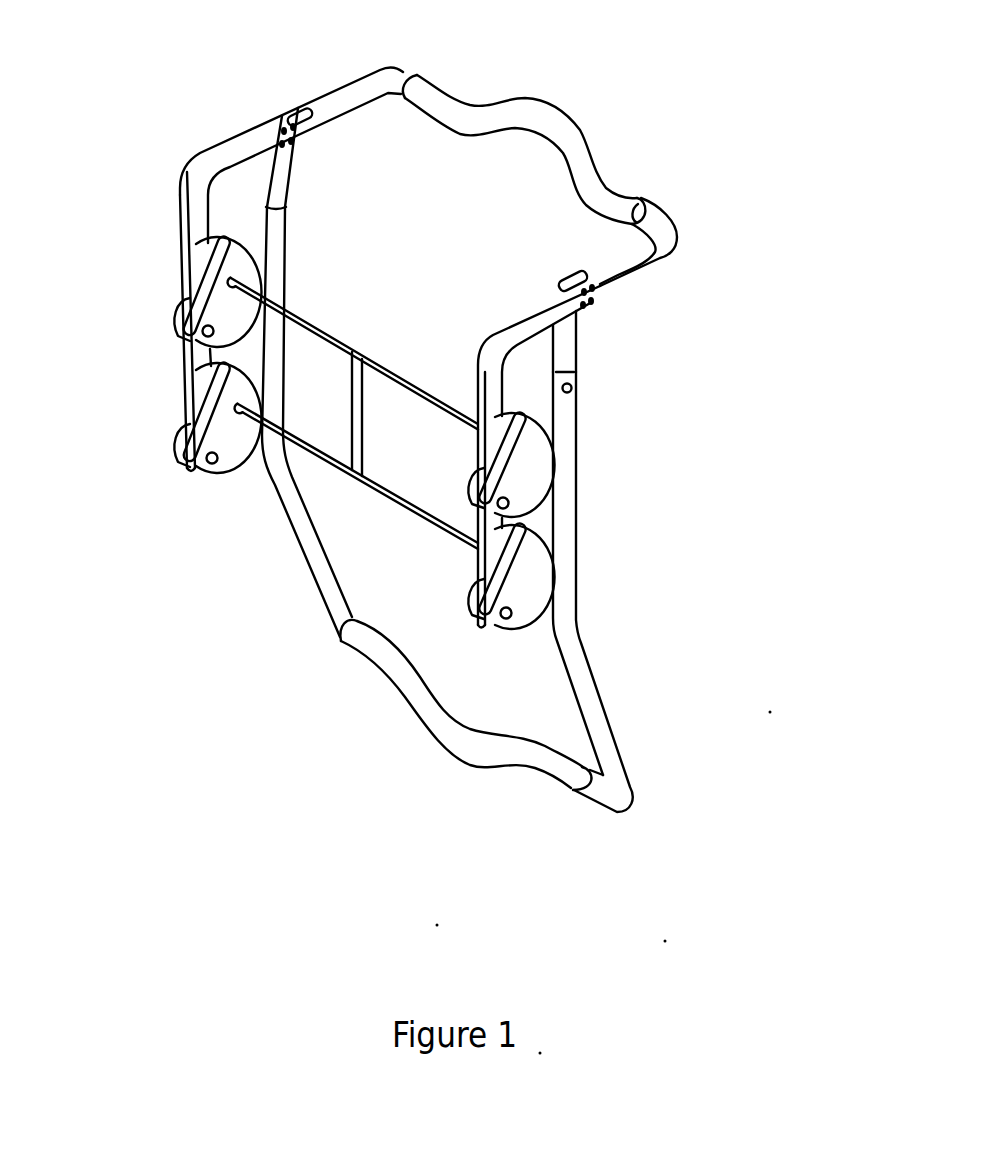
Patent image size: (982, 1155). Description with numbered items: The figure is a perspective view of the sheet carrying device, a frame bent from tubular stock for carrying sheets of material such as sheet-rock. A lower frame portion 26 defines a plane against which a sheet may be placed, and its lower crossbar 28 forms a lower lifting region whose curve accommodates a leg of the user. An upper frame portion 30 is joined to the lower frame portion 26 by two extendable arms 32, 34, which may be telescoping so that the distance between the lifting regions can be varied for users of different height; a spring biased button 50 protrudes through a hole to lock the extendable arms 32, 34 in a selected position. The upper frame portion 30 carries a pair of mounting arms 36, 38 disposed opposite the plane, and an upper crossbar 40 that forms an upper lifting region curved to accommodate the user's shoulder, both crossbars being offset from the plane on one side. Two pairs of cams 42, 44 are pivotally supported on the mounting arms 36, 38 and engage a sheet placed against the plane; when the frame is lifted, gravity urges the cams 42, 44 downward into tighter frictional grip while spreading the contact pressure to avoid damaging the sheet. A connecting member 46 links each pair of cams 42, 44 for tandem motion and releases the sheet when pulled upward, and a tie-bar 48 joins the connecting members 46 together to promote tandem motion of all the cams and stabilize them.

The lower frame portion 26 is at (576, 515).
The lower crossbar 28 is at (515, 767).
The upper frame portion 30 is at (683, 222).
The extendable arm 32 is at (568, 345).
The extendable arm 34 is at (288, 172).
The mounting arm 36 is at (183, 240).
The mounting arm 38 is at (483, 567).
The upper crossbar 40 is at (592, 143).
The cam 42 is at (173, 328).
The cam 44 is at (173, 445).
The connecting member 46 is at (353, 343).
The tie-bar 48 is at (362, 437).
The spring biased button 50 is at (573, 388).